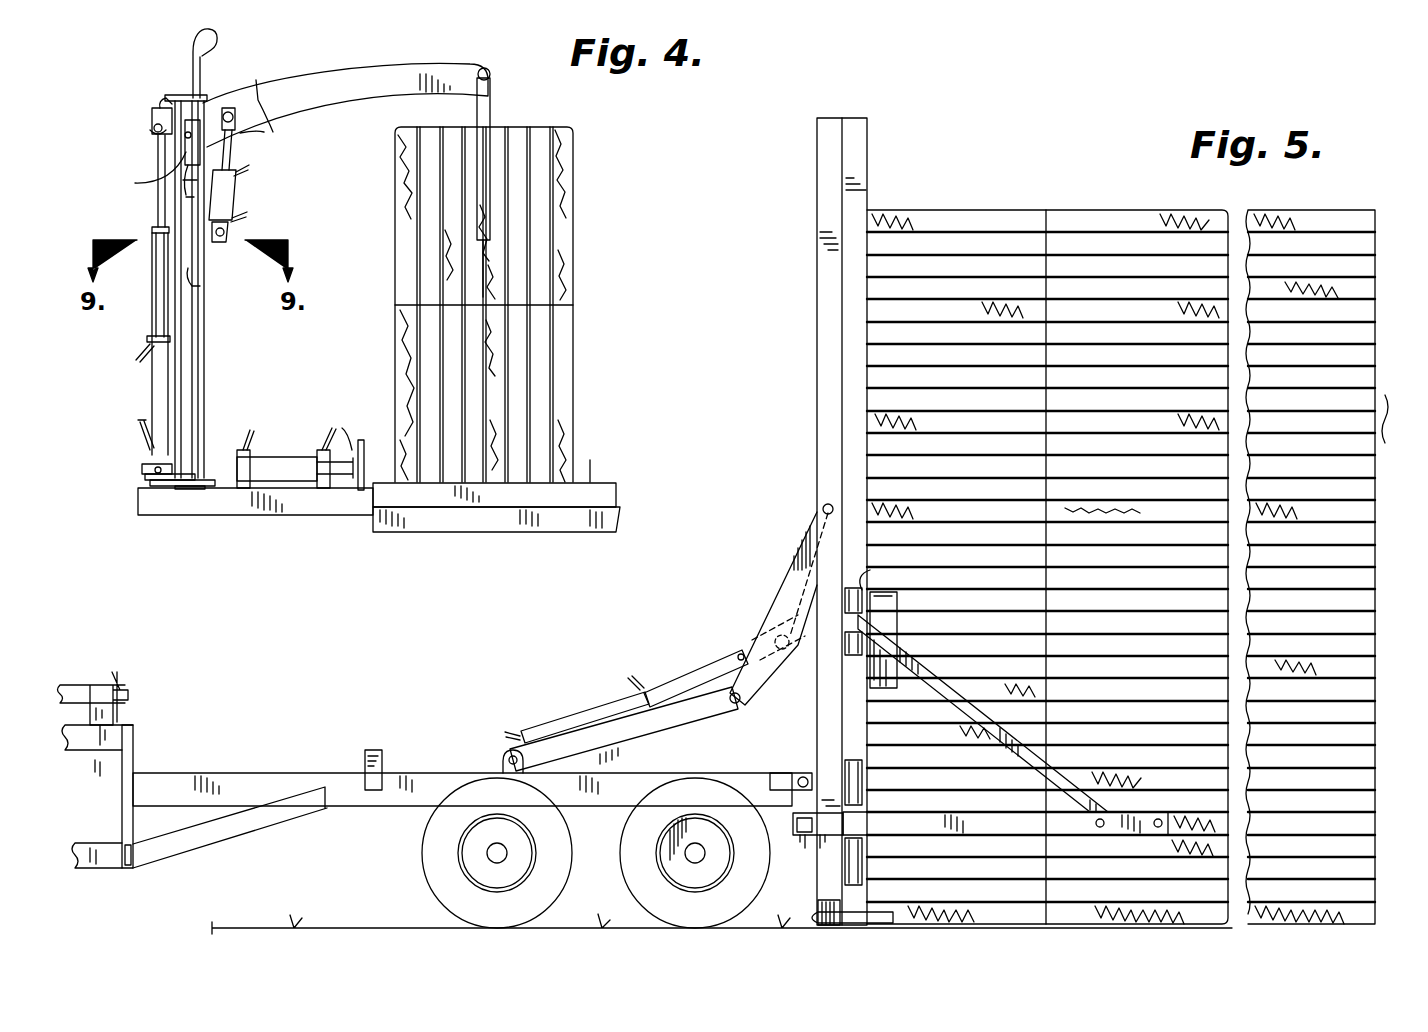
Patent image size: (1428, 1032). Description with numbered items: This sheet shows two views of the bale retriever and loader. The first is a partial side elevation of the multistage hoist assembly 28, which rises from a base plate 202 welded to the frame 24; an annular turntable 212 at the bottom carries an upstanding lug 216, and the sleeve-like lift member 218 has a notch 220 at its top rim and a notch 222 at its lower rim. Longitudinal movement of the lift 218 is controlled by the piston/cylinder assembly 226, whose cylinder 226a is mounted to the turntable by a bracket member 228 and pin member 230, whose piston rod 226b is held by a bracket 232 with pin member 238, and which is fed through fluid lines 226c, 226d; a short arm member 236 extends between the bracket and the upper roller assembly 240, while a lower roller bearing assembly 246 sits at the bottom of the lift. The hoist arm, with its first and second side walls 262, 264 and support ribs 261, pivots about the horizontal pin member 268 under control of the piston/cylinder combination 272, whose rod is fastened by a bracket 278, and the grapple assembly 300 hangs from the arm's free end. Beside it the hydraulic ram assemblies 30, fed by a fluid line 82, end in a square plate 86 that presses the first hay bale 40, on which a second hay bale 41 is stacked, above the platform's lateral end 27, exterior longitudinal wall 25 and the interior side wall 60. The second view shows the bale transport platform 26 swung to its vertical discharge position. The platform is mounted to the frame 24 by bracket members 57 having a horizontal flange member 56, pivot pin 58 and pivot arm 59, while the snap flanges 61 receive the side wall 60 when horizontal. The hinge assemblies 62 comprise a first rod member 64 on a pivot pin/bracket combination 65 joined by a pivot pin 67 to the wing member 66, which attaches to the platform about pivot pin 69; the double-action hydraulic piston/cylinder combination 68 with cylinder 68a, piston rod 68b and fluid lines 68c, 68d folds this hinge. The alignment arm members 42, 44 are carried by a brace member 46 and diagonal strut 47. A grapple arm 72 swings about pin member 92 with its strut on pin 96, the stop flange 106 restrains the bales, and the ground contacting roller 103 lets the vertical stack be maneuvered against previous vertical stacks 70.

In FIG. 4, the vehicle chassis/support framework 24 is at (322, 498).
In FIG. 5, the vehicle chassis/support framework 24 is at (330, 790).
In FIG. 4, the exterior longitudinal wall 25 is at (606, 495).
In FIG. 5, the exterior longitudinal wall 25 is at (855, 140).
In FIG. 4, the bale transport platform 26 is at (590, 482).
In FIG. 5, the lateral end 27 is at (858, 118).
In FIG. 4, the multistage hoist assembly 28 is at (108, 64).
In FIG. 4, the hydraulic ram assemblies 30 is at (290, 456).
In FIG. 4, the first hay bale 40 is at (567, 351).
In FIG. 5, the first hay bale 40 is at (1014, 870).
In FIG. 4, the second hay bale 41 is at (566, 226).
In FIG. 5, the second hay bale 41 is at (1174, 870).
In FIG. 5, the laterally extending arm member 42 is at (128, 866).
In FIG. 5, the longitudinally extending arm member 44 is at (92, 862).
In FIG. 5, the brace member 46 is at (131, 832).
In FIG. 5, the diagonal strut 47 is at (226, 830).
In FIG. 5, the horizontal flange member 56 is at (784, 782).
In FIG. 5, the bracket members 57 is at (794, 762).
In FIG. 5, the pivot pin 58 is at (800, 778).
In FIG. 5, the pivot arm 59 is at (830, 780).
In FIG. 4, the depending interior side wall 60 is at (566, 522).
In FIG. 5, the depending interior side wall 60 is at (822, 155).
In FIG. 5, the snap flanges 61 is at (384, 762).
In FIG. 5, the hinge assemblies 62 is at (688, 625).
In FIG. 5, the first rod member 64 is at (672, 718).
In FIG. 5, the pivot pin/bracket combination 65 is at (486, 745).
In FIG. 5, the wing member 66 is at (800, 555).
In FIG. 5, the pivot pin 67 is at (740, 702).
In FIG. 5, the double-action hydraulic piston/cylinder combination 68 is at (626, 689).
In FIG. 5, the cylinder 68a is at (614, 706).
In FIG. 5, the piston rod 68b is at (740, 655).
In FIG. 5, the fluid line 68c is at (552, 712).
In FIG. 5, the fluid line 68d is at (639, 670).
In FIG. 5, the pivot pin 69 is at (822, 498).
In FIG. 5, the previous vertical stacks 70 is at (1388, 236).
In FIG. 5, the grapple arm 72 is at (1054, 826).
In FIG. 4, the fluid line 82 is at (352, 440).
In FIG. 4, the square plate 86 is at (364, 446).
In FIG. 5, the pin member 92 is at (860, 878).
In FIG. 5, the pin 96 is at (860, 588).
In FIG. 5, the ground contacting roller 103 is at (814, 905).
In FIG. 5, the stop flange 106 is at (880, 922).
In FIG. 4, the base plate 202 is at (182, 490).
In FIG. 4, the annular turntable 212 is at (165, 481).
In FIG. 4, the lug 216 is at (186, 487).
In FIG. 4, the sleeve-like lift member 218 is at (204, 254).
In FIG. 4, the notch 220 is at (205, 98).
In FIG. 4, the notch 222 is at (196, 290).
In FIG. 4, the piston/cylinder assembly 226 is at (112, 295).
In FIG. 4, the cylinder 226a is at (152, 378).
In FIG. 4, the piston rod 226b is at (152, 280).
In FIG. 4, the fluid line 226c is at (138, 433).
In FIG. 4, the fluid line 226d is at (146, 347).
In FIG. 4, the bracket member 228 is at (150, 475).
In FIG. 4, the pin member 230 is at (154, 470).
In FIG. 4, the bracket 232 is at (152, 132).
In FIG. 4, the short arm member 236 is at (156, 114).
In FIG. 4, the pin member 238 is at (150, 128).
In FIG. 4, the upper roller assembly 240 is at (140, 82).
In FIG. 4, the lower roller bearing assembly 246 is at (222, 281).
In FIG. 4, the support ribs 261 is at (262, 132).
In FIG. 4, the first side wall 262 is at (273, 97).
In FIG. 4, the second side wall 264 is at (390, 70).
In FIG. 4, the horizontal pin member 268 is at (150, 171).
In FIG. 4, the piston/cylinder combination 272 is at (272, 184).
In FIG. 4, the bracket 278 is at (232, 130).
In FIG. 4, the grapple assembly 300 is at (516, 113).